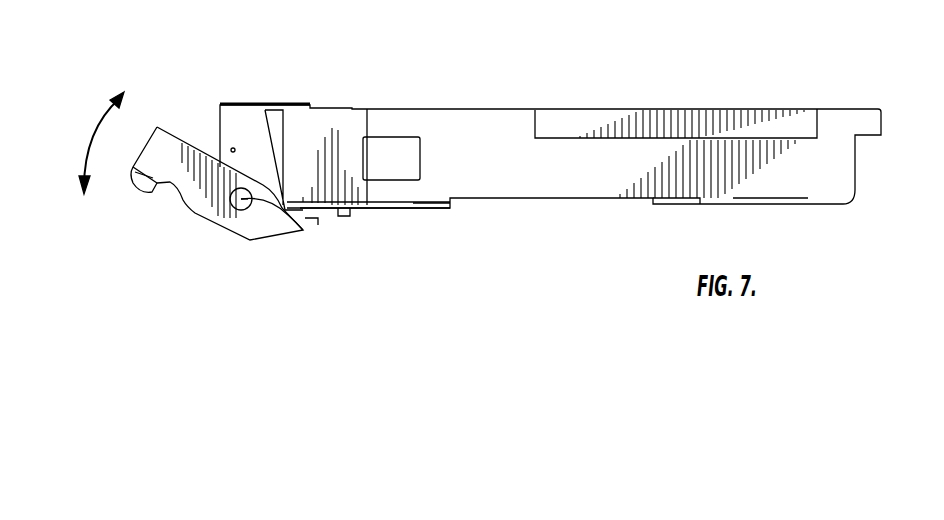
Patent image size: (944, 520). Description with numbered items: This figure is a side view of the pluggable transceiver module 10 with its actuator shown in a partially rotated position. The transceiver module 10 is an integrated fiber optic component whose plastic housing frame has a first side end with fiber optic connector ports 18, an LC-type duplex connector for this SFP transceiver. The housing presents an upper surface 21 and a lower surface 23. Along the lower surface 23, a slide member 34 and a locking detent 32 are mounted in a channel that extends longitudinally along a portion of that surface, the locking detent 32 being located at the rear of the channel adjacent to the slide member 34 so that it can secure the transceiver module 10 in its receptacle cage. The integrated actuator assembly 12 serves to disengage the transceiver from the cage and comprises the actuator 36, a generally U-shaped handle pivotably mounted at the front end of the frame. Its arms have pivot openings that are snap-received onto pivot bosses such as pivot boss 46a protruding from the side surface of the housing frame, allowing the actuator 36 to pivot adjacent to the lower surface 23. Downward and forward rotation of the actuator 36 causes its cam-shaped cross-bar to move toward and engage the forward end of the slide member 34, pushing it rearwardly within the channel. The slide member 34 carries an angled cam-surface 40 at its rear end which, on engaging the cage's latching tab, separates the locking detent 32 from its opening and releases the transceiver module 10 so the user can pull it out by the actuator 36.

The pluggable transceiver module 10 is at (543, 366).
The actuator assembly 12 is at (164, 252).
The fiber optic connector ports 18 is at (198, 127).
The upper surface 21 is at (400, 108).
The lower surface 23 is at (413, 210).
The locking detent 32 is at (335, 213).
The slide member 34 is at (326, 225).
The actuator 36 is at (147, 187).
The angled cam-surface 40 is at (332, 214).
The pivot boss 46a is at (304, 228).